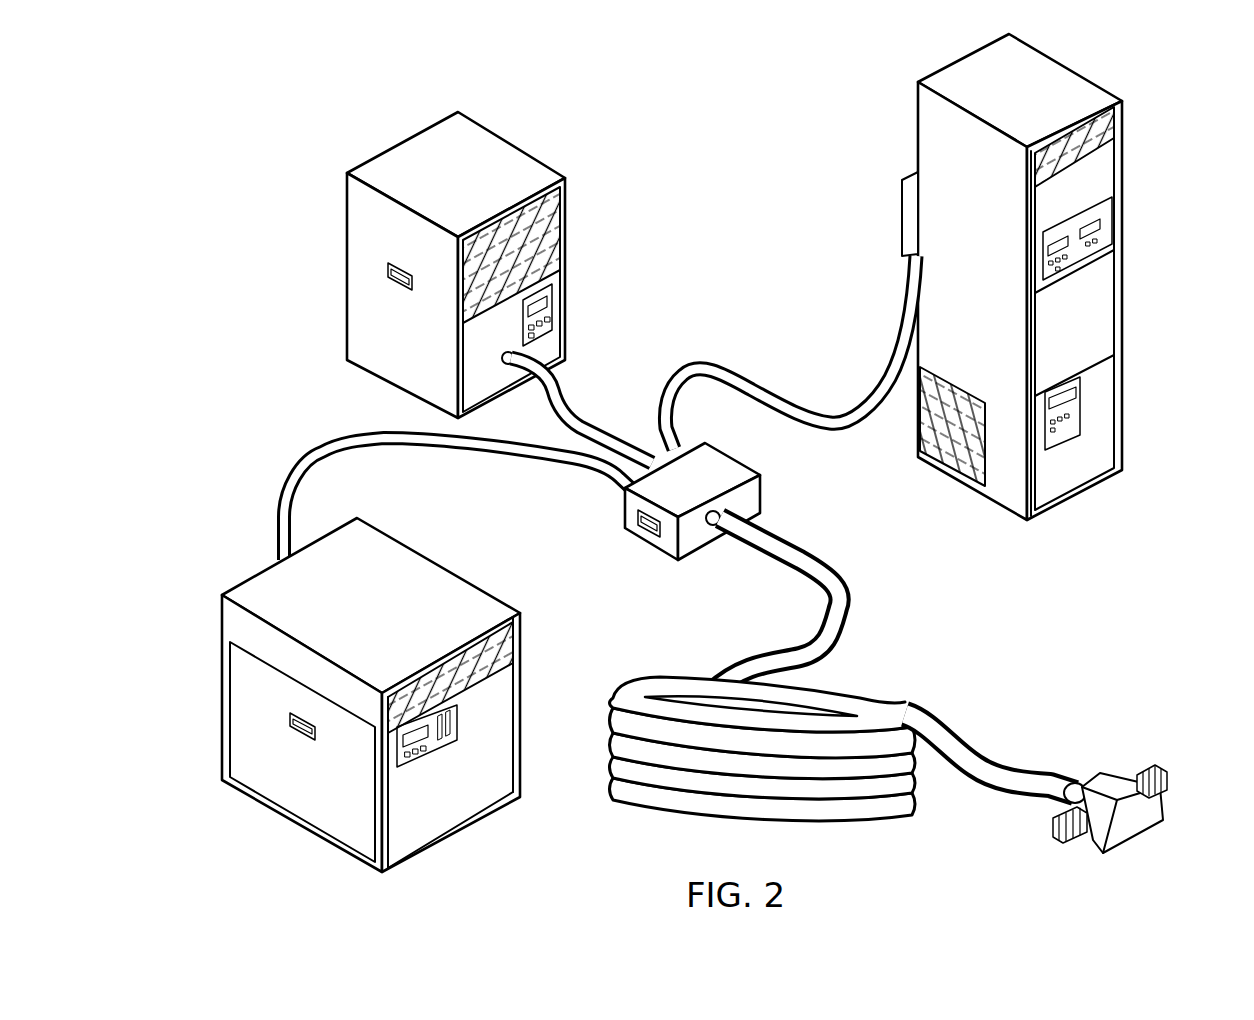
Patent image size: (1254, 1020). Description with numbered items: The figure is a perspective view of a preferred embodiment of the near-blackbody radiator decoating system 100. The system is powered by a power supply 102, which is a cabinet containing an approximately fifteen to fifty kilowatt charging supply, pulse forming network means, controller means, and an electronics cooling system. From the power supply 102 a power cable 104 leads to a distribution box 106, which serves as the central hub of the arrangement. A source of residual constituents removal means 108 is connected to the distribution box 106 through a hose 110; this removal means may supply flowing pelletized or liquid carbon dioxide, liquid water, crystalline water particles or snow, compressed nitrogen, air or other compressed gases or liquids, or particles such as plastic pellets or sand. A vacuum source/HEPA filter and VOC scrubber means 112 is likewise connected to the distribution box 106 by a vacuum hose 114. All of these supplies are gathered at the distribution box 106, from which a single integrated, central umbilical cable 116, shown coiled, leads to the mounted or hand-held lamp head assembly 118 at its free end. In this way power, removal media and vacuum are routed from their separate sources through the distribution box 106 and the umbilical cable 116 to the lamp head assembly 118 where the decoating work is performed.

The decoating system 100 is at (716, 212).
The power supply 102 is at (1012, 277).
The power cable 104 is at (898, 333).
The distribution box 106 is at (692, 501).
The residual constituents removal means 108 is at (456, 265).
The hose 110 is at (620, 432).
The vacuum source/HEPA filter and VOC scrubber means 112 is at (371, 695).
The vacuum hose 114 is at (340, 434).
The umbilical cable 116 is at (905, 700).
The lamp head assembly 118 is at (1132, 770).